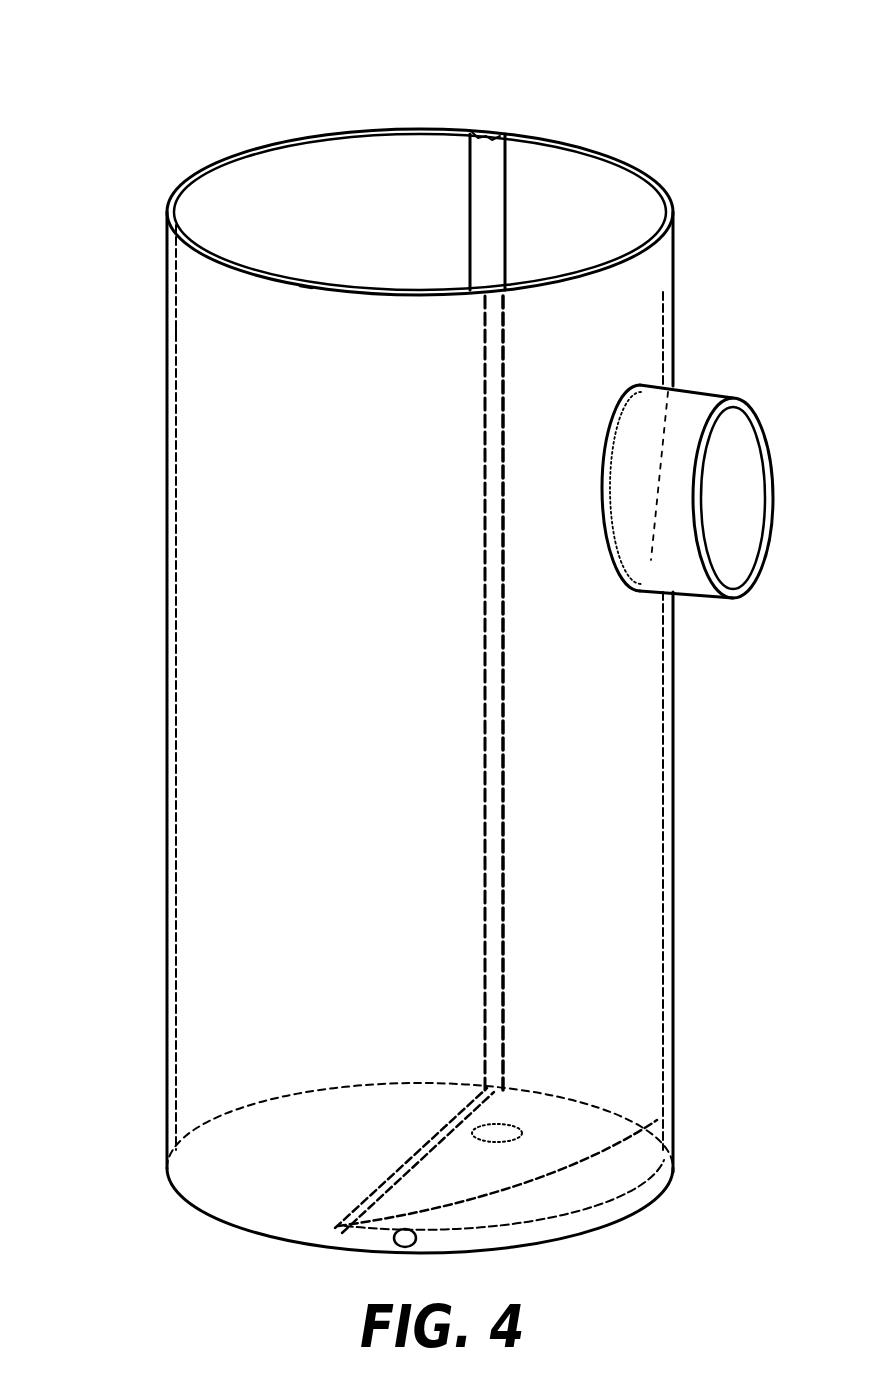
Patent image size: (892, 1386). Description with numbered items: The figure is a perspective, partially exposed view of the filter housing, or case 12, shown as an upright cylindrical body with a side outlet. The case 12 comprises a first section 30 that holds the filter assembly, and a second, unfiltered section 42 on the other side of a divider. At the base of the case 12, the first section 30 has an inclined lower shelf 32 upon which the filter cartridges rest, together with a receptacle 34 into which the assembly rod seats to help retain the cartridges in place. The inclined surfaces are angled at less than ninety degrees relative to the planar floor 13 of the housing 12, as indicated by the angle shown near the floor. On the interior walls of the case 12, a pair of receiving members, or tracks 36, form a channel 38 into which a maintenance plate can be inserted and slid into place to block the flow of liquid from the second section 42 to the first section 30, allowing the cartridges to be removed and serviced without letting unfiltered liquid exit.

The filter housing 12 is at (80, 718).
The planar floor 13 is at (507, 1208).
The first section 30 is at (627, 230).
The inclined lower shelf 32 is at (653, 1124).
The receptacle 34 is at (523, 1130).
The receiving members 36 is at (478, 135).
The channel 38 is at (488, 218).
The second section 42 is at (313, 200).